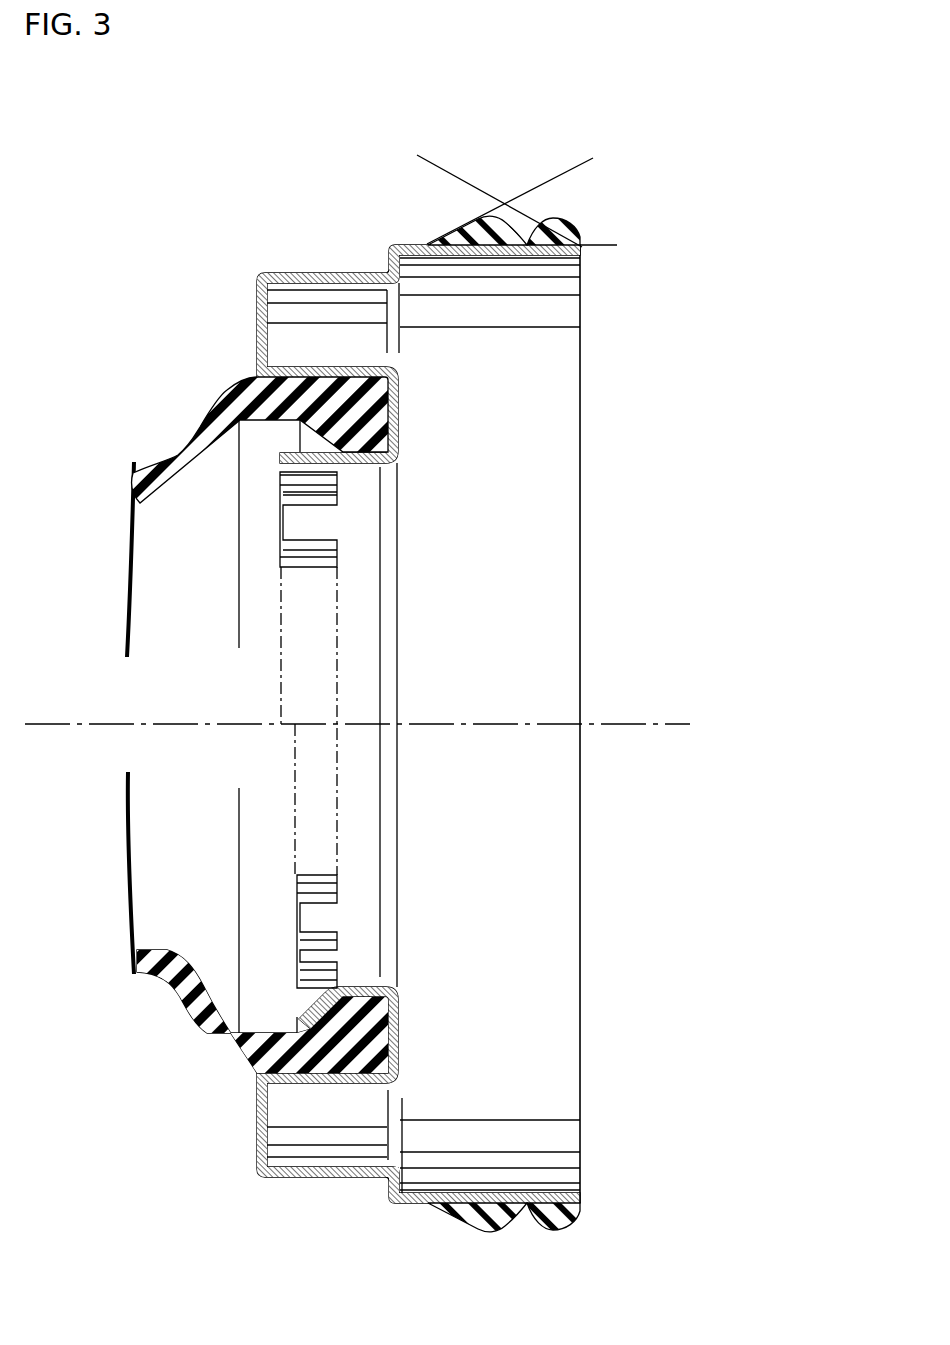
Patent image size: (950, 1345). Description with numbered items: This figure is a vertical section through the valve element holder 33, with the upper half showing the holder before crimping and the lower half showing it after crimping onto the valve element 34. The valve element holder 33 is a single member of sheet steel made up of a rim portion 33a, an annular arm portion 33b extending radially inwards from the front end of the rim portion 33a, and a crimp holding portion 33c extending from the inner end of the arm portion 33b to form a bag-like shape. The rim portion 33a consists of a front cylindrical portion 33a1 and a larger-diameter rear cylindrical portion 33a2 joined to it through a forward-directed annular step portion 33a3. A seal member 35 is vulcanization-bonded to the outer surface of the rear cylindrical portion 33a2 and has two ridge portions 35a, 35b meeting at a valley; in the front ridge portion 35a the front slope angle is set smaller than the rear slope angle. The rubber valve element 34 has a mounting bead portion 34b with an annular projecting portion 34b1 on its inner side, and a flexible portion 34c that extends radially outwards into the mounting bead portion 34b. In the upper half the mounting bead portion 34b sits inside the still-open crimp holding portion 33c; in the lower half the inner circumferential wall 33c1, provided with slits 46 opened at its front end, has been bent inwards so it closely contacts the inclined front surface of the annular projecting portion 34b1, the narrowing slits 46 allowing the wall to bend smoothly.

The valve element holder 33 is at (264, 270).
The rim portion 33a is at (414, 168).
The front cylindrical portion 33a1 is at (308, 272).
The rear cylindrical portion 33a2 is at (480, 248).
The annular step portion 33a3 is at (388, 272).
The annular arm portion 33b is at (256, 335).
The crimp holding portion 33c is at (373, 725).
The inner circumferential wall 33c1 is at (352, 467).
The valve element 34 is at (289, 736).
The mounting bead portion 34b is at (369, 1014).
The annular projecting portion 34b1 is at (367, 998).
The flexible portion 34c is at (192, 1015).
The seal member 35 is at (504, 643).
The front ridge portion 35a is at (497, 222).
The rear ridge portion 35b is at (555, 222).
The slits 46 is at (282, 476).